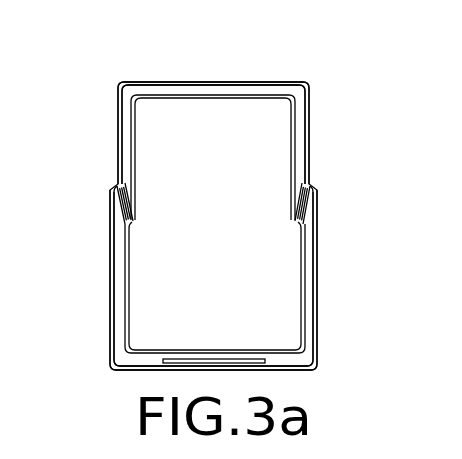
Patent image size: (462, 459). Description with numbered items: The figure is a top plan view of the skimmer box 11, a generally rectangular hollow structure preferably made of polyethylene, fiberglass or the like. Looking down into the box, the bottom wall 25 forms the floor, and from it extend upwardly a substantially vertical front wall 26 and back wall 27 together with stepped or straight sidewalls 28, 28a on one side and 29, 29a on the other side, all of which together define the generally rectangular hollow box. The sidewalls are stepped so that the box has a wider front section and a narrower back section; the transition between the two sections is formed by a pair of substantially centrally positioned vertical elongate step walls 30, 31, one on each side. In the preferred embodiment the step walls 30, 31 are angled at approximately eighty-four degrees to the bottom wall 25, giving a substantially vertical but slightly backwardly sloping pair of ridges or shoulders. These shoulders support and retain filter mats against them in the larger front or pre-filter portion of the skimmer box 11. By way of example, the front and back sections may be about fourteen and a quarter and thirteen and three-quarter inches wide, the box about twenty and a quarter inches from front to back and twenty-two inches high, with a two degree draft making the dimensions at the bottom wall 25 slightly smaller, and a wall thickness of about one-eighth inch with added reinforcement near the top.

The skimmer box 11 is at (318, 101).
The bottom wall 25 is at (227, 259).
The front wall 26 is at (301, 369).
The back wall 27 is at (213, 82).
The sidewall 28 is at (110, 282).
The sidewall 28a is at (118, 113).
The sidewall 29 is at (318, 281).
The sidewall 29a is at (309, 148).
The step wall 30 is at (118, 185).
The step wall 31 is at (313, 183).